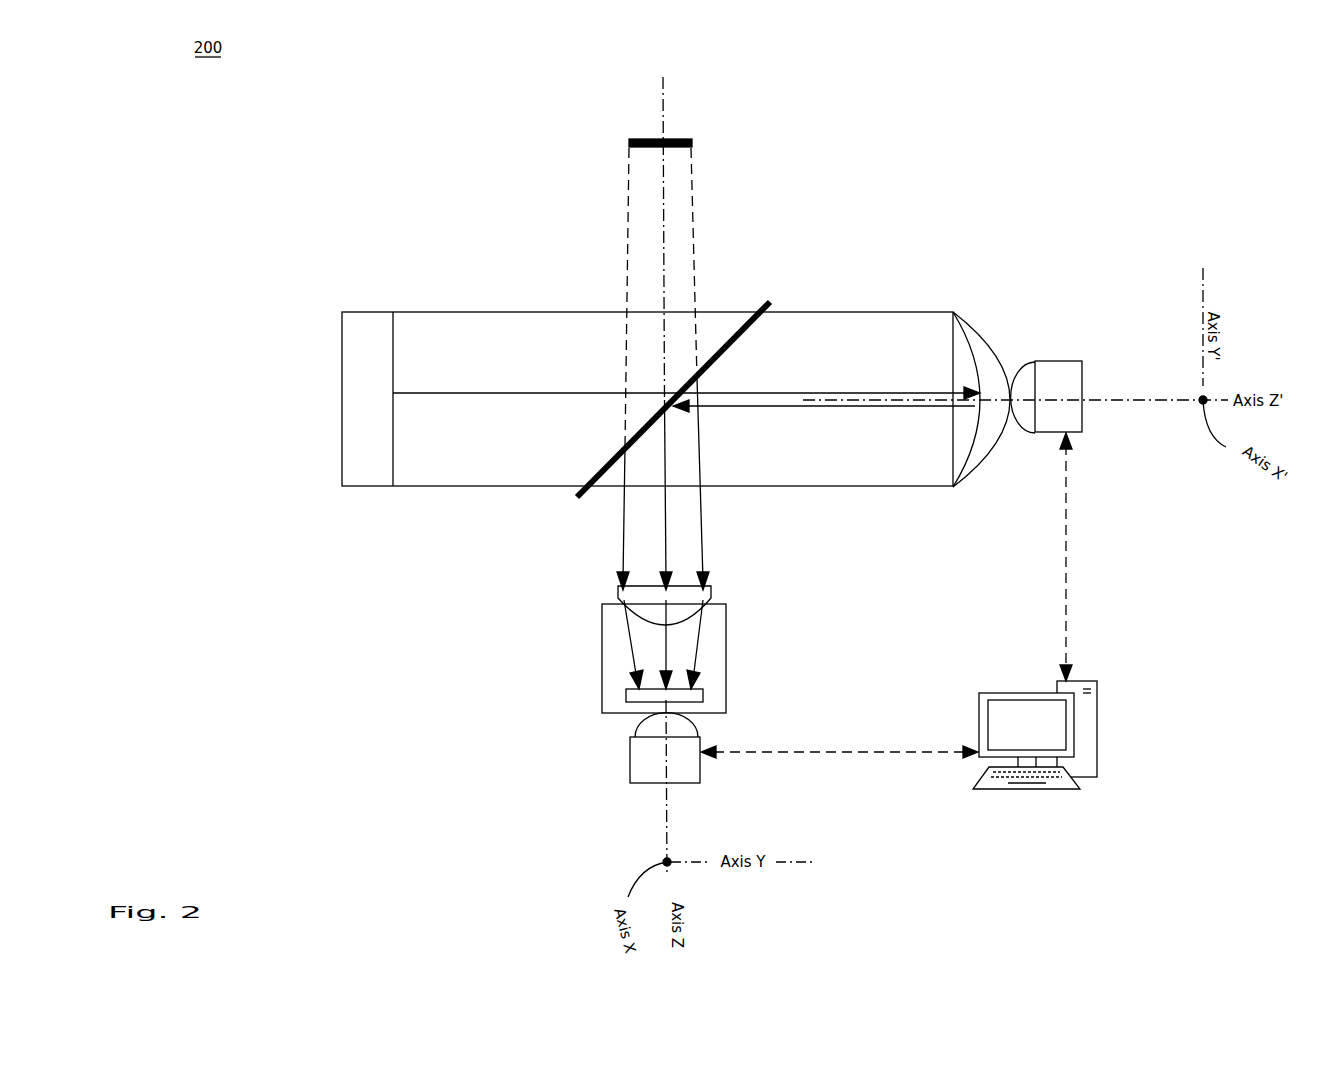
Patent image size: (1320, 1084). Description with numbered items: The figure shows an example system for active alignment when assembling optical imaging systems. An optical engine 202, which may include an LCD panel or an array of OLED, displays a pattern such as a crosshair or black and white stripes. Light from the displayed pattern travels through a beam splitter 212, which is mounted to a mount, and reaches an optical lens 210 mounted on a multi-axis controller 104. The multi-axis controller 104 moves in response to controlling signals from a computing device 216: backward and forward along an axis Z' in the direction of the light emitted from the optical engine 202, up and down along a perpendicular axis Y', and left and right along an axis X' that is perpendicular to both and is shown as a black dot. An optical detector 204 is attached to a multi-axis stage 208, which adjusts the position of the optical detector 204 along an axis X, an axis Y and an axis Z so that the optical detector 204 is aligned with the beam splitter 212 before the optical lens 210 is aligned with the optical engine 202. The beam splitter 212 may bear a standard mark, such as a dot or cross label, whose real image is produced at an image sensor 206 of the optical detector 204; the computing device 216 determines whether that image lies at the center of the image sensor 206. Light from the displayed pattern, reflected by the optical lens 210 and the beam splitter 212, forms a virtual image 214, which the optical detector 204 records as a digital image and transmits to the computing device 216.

The optical engine 202 is at (342, 453).
The optical detector 204 is at (726, 632).
The image sensor 206 is at (626, 697).
The multi-axis stage 208 is at (667, 783).
The optical lens 210 is at (990, 326).
The beam splitter 212 is at (763, 300).
The virtual image 214 is at (667, 138).
The computing device 216 is at (1053, 777).
The multi-axis controller 104 is at (1083, 400).